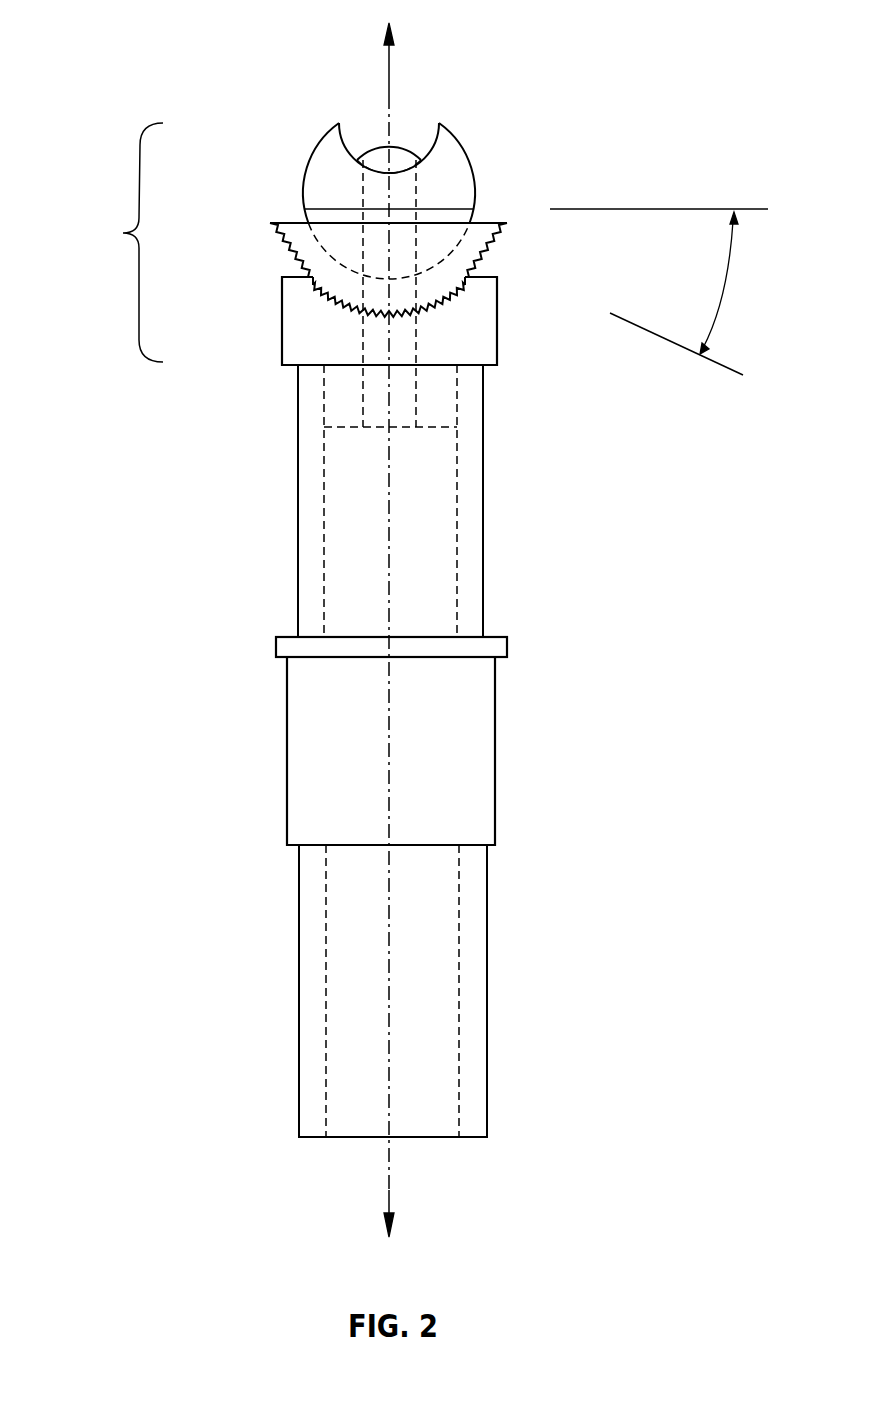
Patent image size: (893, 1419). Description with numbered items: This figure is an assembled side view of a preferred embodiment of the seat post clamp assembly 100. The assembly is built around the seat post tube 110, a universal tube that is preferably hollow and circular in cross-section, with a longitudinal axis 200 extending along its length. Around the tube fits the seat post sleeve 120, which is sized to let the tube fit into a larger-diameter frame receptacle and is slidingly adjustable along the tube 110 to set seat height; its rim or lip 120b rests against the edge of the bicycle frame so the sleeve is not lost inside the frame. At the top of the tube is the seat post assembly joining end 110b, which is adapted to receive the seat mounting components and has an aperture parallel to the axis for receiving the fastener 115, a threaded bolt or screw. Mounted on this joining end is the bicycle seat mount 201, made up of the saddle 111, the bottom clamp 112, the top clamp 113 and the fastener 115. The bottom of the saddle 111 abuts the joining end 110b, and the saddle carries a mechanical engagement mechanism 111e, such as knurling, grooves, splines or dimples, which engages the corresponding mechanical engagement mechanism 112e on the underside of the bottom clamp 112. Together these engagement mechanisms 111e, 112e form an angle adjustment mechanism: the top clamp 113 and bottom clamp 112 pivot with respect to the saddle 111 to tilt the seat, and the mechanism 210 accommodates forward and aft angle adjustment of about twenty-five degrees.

The seat post clamp assembly 100 is at (243, 536).
The seat post tube 110 is at (484, 545).
The seat post assembly joining end 110b is at (484, 372).
The saddle 111 is at (497, 323).
The mechanical engagement mechanism 111e is at (293, 265).
The bottom clamp 112 is at (478, 285).
The mechanical engagement mechanism 112e is at (272, 236).
The top clamp 113 is at (470, 163).
The fastener 115 is at (402, 146).
The seat post sleeve 120 is at (496, 738).
The rim or lip 120b is at (507, 643).
The longitudinal axis 200 is at (390, 636).
The bicycle seat mount 201 is at (124, 242).
The angle of inclination (25 degrees) 210 is at (691, 366).